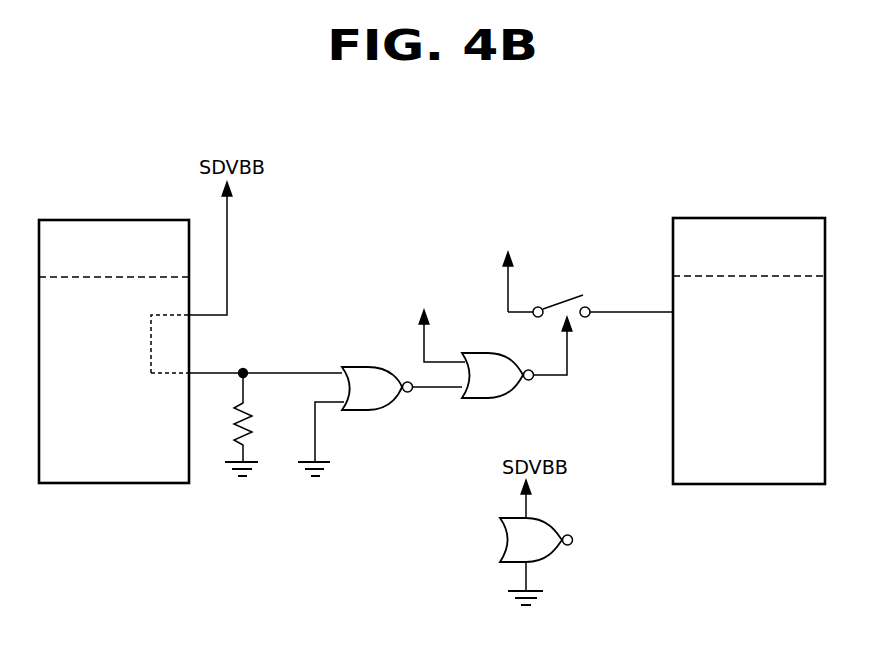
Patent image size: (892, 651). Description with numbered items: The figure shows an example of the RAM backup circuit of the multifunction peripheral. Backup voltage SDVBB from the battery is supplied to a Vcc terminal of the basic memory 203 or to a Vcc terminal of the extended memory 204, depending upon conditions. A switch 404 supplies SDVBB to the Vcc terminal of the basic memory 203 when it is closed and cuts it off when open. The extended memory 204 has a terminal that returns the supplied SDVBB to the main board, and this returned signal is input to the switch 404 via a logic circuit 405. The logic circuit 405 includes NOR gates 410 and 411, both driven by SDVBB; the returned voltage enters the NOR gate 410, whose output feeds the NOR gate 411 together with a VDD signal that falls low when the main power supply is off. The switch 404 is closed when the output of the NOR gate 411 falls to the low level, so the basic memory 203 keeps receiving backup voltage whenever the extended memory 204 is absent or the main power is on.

The basic memory 203 is at (743, 217).
The extended memory 204 is at (105, 219).
The switch 404 is at (588, 300).
The logic circuit 405 is at (436, 432).
The NOR gate 410 is at (348, 366).
The NOR gate 411 is at (505, 393).